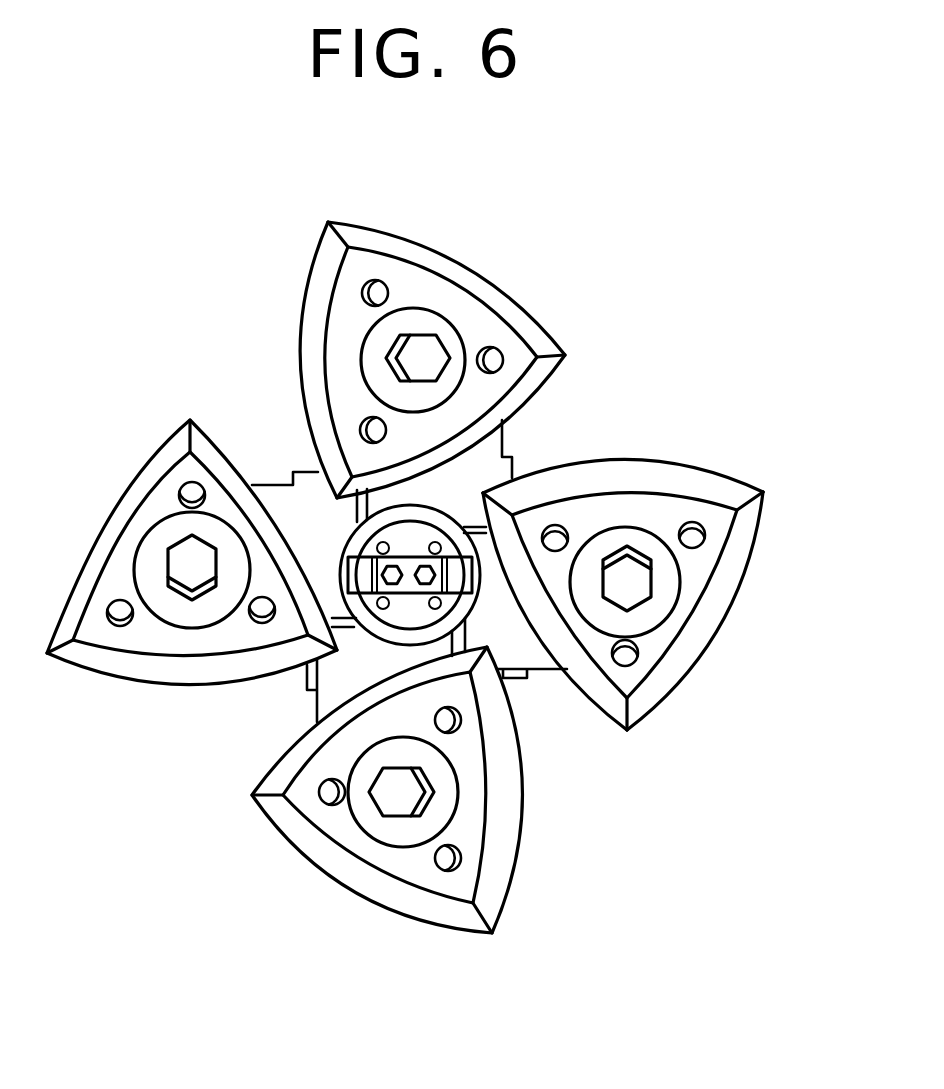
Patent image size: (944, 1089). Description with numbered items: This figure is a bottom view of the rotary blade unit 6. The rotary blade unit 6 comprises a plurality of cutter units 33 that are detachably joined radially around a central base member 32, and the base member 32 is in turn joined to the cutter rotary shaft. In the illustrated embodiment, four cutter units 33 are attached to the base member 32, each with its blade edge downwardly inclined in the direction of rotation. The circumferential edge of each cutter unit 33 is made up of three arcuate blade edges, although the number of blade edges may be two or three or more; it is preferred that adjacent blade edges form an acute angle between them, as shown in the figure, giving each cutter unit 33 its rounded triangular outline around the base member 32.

The rotary blade unit 6 is at (664, 398).
The base member 32 is at (468, 475).
The cutter unit 33 is at (460, 258).